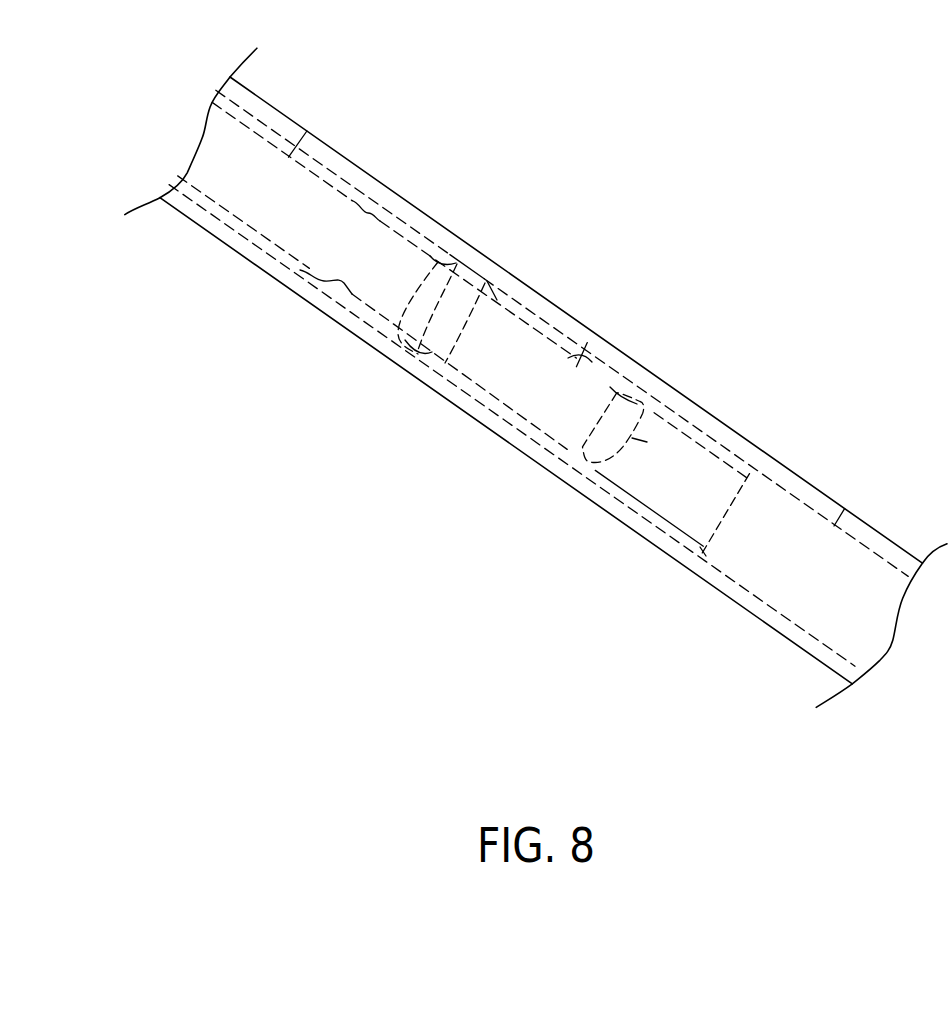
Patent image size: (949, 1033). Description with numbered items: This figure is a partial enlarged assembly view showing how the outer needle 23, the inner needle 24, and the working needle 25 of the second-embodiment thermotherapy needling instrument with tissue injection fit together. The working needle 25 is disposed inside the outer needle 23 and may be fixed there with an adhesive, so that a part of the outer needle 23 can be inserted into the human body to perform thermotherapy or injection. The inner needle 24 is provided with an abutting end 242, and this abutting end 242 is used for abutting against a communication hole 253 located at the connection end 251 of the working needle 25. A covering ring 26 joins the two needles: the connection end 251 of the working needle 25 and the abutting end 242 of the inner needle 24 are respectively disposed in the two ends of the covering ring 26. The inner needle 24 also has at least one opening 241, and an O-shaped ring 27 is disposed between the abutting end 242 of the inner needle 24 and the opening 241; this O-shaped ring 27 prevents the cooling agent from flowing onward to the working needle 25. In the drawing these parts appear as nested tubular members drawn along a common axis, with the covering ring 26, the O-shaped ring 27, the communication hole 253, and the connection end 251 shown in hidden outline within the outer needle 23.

The connecting tube 23 is at (417, 208).
The first rod section 24 is at (308, 130).
The curved end of first rod section 241 is at (315, 289).
The engaging portion of first rod section 242 is at (588, 330).
The second rod section 25 is at (845, 508).
The end portion of second rod section 251 is at (725, 447).
The engaging hook of second rod section 253 is at (658, 402).
The inner passage 26 is at (553, 472).
The pivot hinge 27 is at (478, 252).